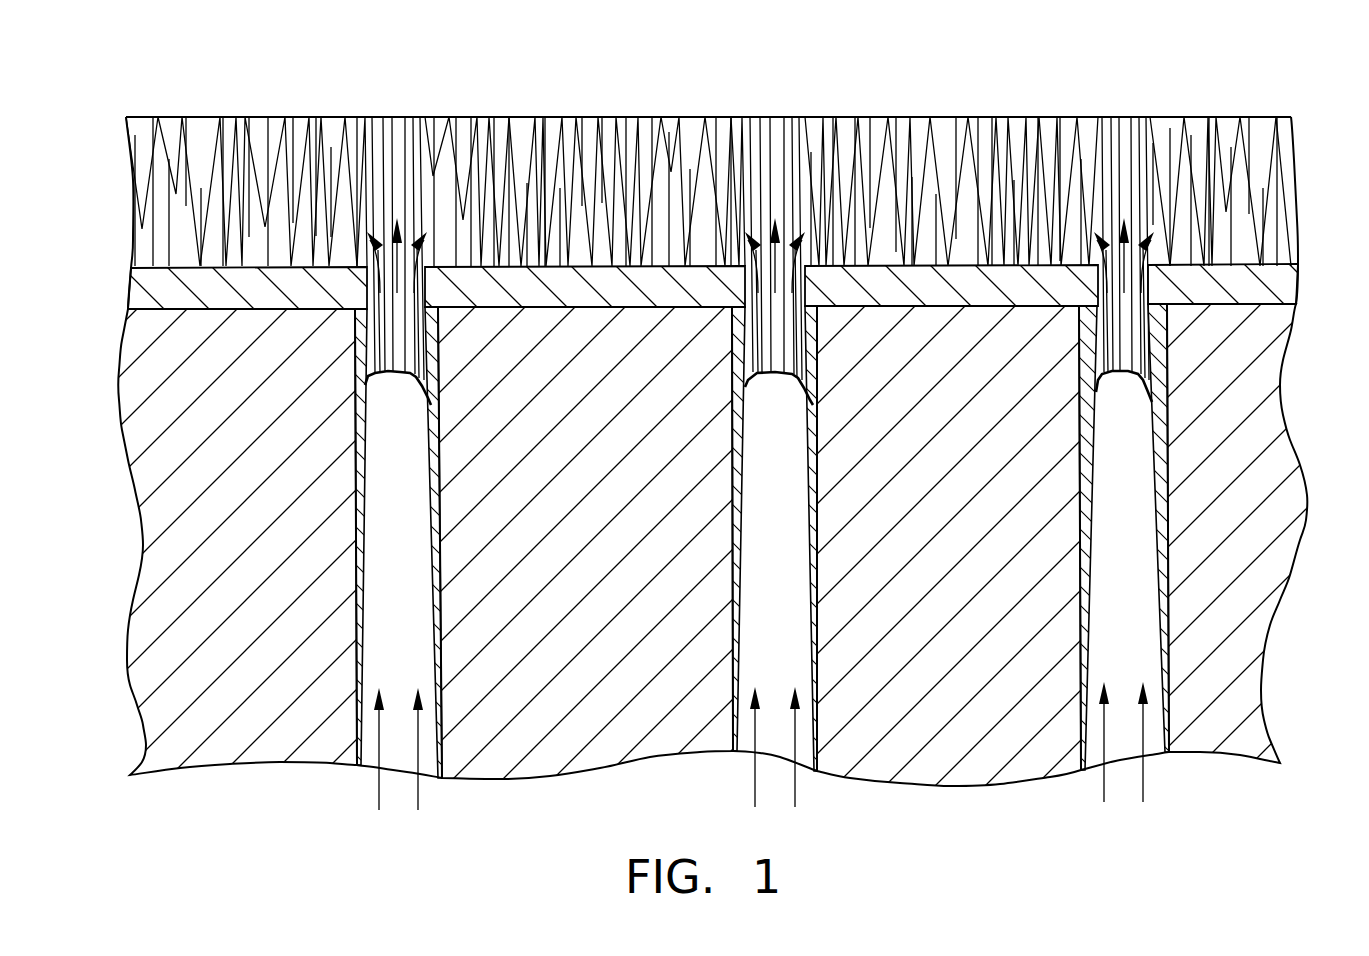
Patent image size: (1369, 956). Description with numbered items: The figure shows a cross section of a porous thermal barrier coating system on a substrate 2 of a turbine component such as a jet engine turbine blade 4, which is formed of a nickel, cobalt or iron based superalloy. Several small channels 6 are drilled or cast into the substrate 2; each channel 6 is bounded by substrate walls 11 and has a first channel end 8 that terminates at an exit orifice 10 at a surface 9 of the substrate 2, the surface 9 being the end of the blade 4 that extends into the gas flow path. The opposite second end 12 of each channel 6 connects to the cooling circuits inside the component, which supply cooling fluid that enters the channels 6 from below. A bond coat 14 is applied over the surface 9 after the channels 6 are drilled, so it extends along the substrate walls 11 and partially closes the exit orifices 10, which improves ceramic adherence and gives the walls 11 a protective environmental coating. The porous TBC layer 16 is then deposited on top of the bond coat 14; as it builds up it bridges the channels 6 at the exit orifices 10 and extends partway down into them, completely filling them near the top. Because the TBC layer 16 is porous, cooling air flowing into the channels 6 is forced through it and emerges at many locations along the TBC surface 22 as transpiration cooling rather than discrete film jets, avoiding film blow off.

The substrate 2 is at (572, 728).
The jet engine turbine blade 4 is at (1207, 92).
The channels 6 is at (406, 646).
The first channel end 8 is at (1158, 303).
The surface 9 is at (503, 308).
The exit orifice 10 is at (1127, 250).
The substrate walls 11 is at (361, 478).
The second end 12 is at (1152, 756).
The bond coat 14 is at (1250, 288).
The porous TBC layer 16 is at (1253, 200).
The TBC surface 22 is at (762, 116).